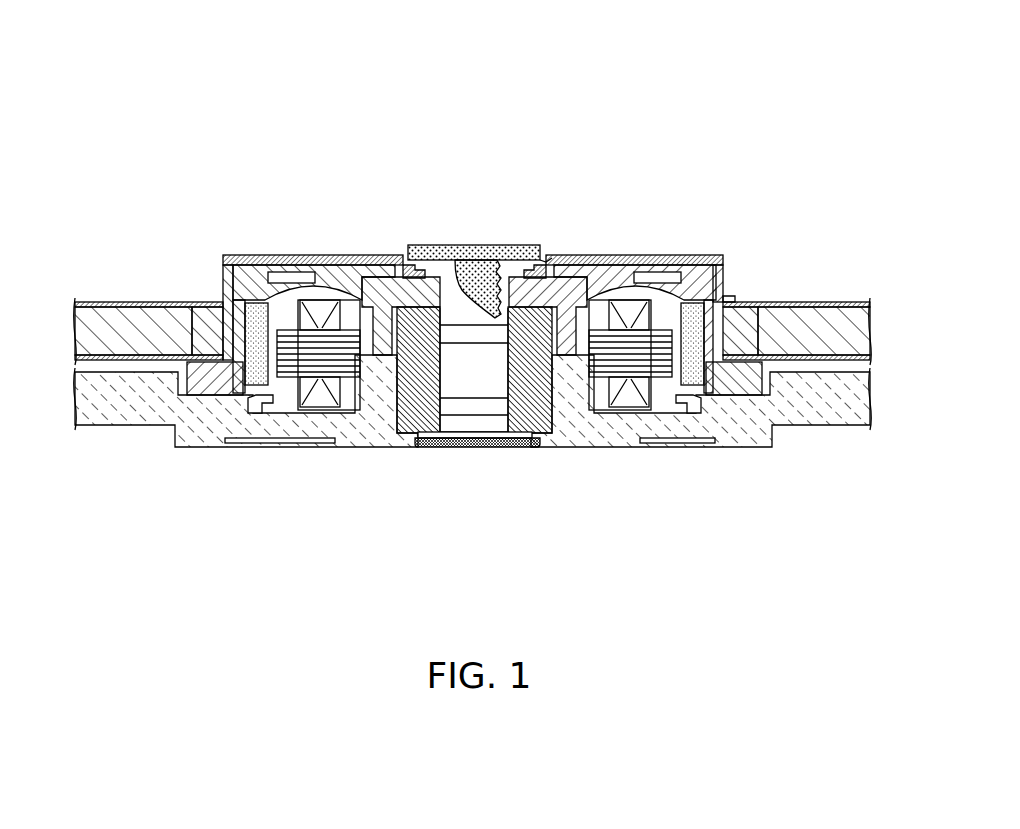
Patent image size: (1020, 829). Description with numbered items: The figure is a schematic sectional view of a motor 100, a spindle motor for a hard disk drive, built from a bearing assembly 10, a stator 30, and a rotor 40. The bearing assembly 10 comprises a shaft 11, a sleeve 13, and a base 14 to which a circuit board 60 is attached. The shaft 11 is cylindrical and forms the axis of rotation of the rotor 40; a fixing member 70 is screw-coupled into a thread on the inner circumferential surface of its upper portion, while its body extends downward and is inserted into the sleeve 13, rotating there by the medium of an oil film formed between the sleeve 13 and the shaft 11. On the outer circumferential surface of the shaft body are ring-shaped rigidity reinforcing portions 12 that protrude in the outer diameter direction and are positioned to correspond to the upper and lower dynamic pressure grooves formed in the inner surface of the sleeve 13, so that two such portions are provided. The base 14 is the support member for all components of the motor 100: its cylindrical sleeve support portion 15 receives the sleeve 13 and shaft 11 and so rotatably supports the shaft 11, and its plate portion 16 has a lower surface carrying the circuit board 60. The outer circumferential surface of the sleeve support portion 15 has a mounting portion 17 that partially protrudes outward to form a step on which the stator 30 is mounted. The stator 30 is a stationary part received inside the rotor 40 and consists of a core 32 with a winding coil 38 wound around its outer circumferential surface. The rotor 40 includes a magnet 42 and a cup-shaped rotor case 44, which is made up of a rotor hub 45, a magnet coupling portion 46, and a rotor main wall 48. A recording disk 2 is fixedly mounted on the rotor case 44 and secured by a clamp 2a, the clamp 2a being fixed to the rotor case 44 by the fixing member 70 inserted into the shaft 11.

The motor 100 is at (490, 120).
The recording disk 2 is at (126, 322).
The clamp 2a is at (278, 256).
The fixing member 70 is at (471, 240).
The bearing assembly 10 is at (320, 538).
The shaft 11 is at (465, 417).
The rigidity reinforcing portions 12 is at (480, 335).
The sleeve 13 is at (413, 440).
The base 14 is at (395, 415).
The sleeve support portion 15 is at (365, 305).
The plate portion 16 is at (255, 407).
The mounting portion 17 is at (345, 363).
The stator 30 is at (653, 538).
The core 32 is at (575, 415).
The winding coil 38 is at (622, 400).
The rotor 40 is at (552, 203).
The magnet 42 is at (692, 305).
The rotor case 44 is at (628, 270).
The rotor hub 45 is at (545, 260).
The magnet coupling portion 46 is at (727, 295).
The rotor main wall 48 is at (594, 300).
The circuit board 60 is at (645, 448).